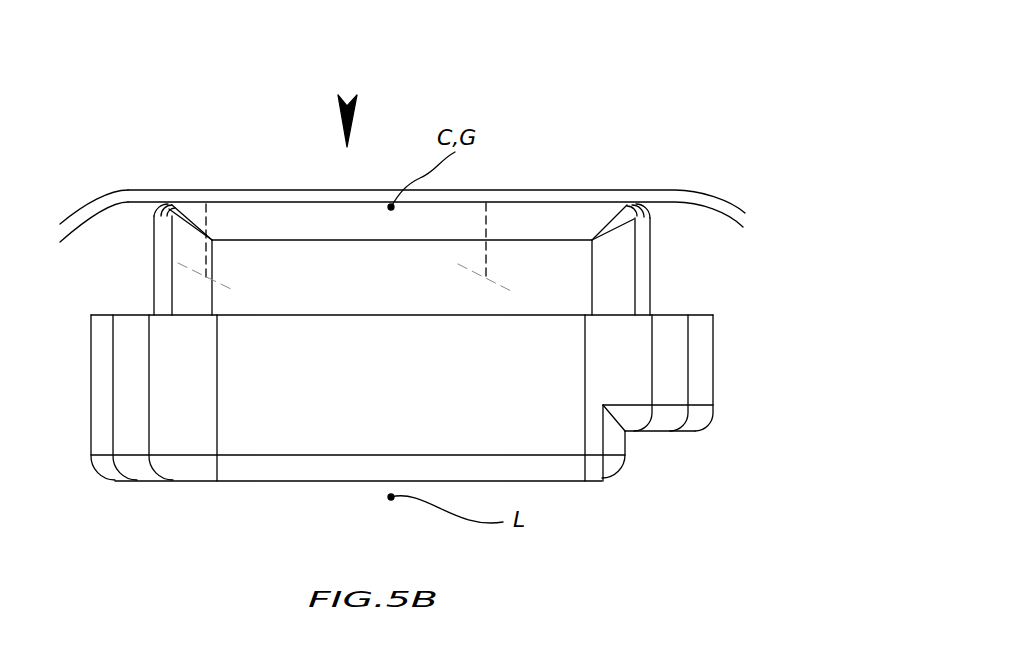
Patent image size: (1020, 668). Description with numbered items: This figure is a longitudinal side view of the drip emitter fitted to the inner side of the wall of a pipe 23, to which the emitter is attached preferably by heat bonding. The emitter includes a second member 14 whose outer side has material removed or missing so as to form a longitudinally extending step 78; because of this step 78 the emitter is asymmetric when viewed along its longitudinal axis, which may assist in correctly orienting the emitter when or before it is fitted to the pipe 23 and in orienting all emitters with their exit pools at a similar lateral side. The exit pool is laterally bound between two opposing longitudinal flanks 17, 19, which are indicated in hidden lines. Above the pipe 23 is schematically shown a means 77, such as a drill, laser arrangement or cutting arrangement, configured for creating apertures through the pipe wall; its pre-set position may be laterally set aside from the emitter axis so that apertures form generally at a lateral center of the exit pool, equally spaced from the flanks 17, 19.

The second member 14 is at (717, 345).
The first flank 17 is at (487, 237).
The second flank 19 is at (208, 258).
The pipe 23 is at (662, 188).
The means for creating apertures 77 is at (353, 118).
The step 78 is at (677, 443).